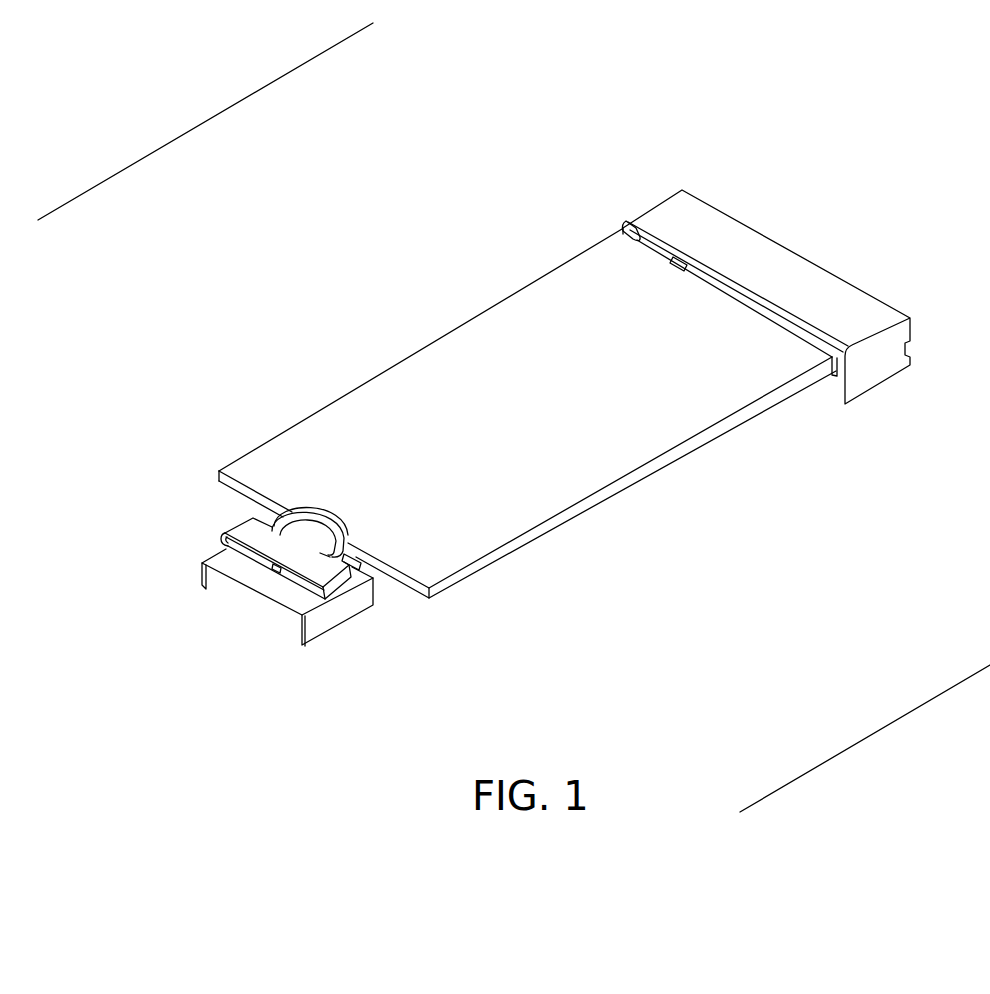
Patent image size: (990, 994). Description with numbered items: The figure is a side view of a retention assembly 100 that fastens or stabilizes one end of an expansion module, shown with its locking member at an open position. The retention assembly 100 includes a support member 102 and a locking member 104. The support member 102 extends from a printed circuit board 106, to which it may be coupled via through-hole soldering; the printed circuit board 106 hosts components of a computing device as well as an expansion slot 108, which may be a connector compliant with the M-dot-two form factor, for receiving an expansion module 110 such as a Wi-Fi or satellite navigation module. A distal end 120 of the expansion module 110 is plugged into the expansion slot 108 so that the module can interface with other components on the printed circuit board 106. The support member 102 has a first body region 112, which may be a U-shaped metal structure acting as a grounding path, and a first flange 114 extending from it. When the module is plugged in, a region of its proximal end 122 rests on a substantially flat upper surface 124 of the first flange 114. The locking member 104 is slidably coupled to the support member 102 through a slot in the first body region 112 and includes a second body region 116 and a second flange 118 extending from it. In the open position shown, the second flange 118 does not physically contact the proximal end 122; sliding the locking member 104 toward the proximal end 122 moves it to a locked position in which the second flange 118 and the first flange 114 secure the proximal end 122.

The retention assembly 100 is at (318, 563).
The support member 102 is at (261, 592).
The locking member 104 is at (344, 563).
The printed circuit board 106 is at (250, 93).
The expansion slot 108 is at (755, 284).
The expansion module 110 is at (428, 350).
The first body region 112 is at (251, 579).
The first flange 114 is at (356, 569).
The second body region 116 is at (328, 578).
The second flange 118 is at (280, 522).
The distal end 120 is at (684, 284).
The proximal end 122 is at (368, 525).
The upper surface 124 is at (348, 550).